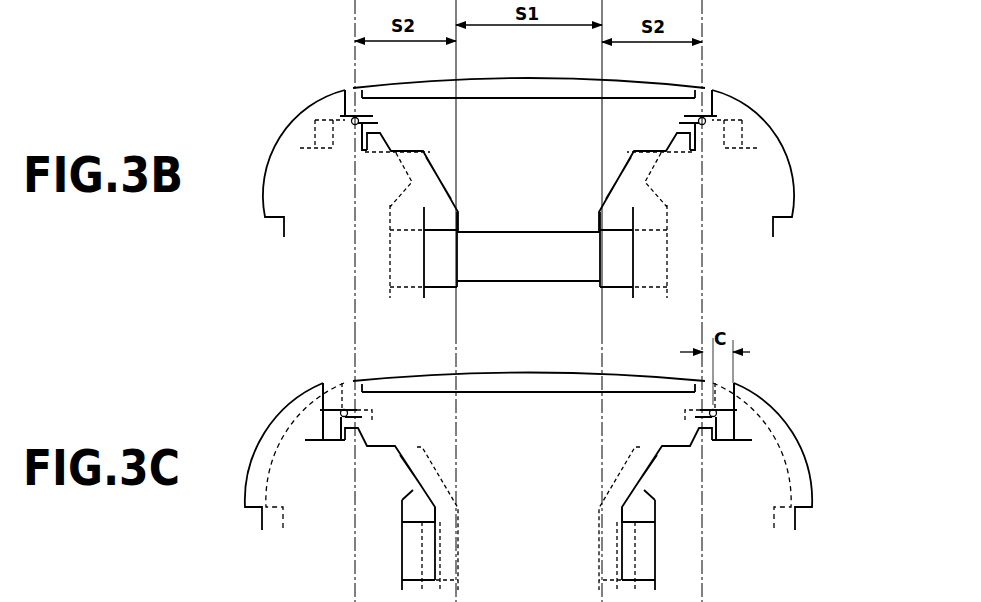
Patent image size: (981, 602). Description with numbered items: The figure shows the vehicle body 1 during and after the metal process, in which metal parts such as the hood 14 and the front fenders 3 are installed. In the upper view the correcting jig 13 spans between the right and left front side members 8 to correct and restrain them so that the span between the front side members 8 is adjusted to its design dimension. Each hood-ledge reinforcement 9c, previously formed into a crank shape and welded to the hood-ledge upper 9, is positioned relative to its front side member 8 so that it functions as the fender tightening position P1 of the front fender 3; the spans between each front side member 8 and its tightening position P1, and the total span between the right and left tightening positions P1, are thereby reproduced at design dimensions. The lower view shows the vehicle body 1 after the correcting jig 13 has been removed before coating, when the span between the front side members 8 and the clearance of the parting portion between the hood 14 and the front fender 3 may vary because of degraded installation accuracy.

In FIG. 3B, the vehicle body 1 is at (775, 126).
In FIG. 3B, the front fender 3 is at (265, 172).
In FIG. 3C, the front fender 3 is at (257, 440).
In FIG. 3B, the front side member 8 is at (420, 255).
In FIG. 3C, the front side member 8 is at (396, 565).
In FIG. 3B, the lever arm 9 is at (436, 166).
In FIG. 3C, the lever arm 9 is at (389, 451).
In FIG. 3B, the hood-ledge reinforcement 9c is at (343, 145).
In FIG. 3B, the correcting jig 13 is at (519, 284).
In FIG. 3B, the hood 14 is at (653, 82).
In FIG. 3C, the hood 14 is at (539, 378).
In FIG. 3B, the fender tightening position P1 is at (352, 118).
In FIG. 3C, the fender tightening position P1 is at (341, 410).